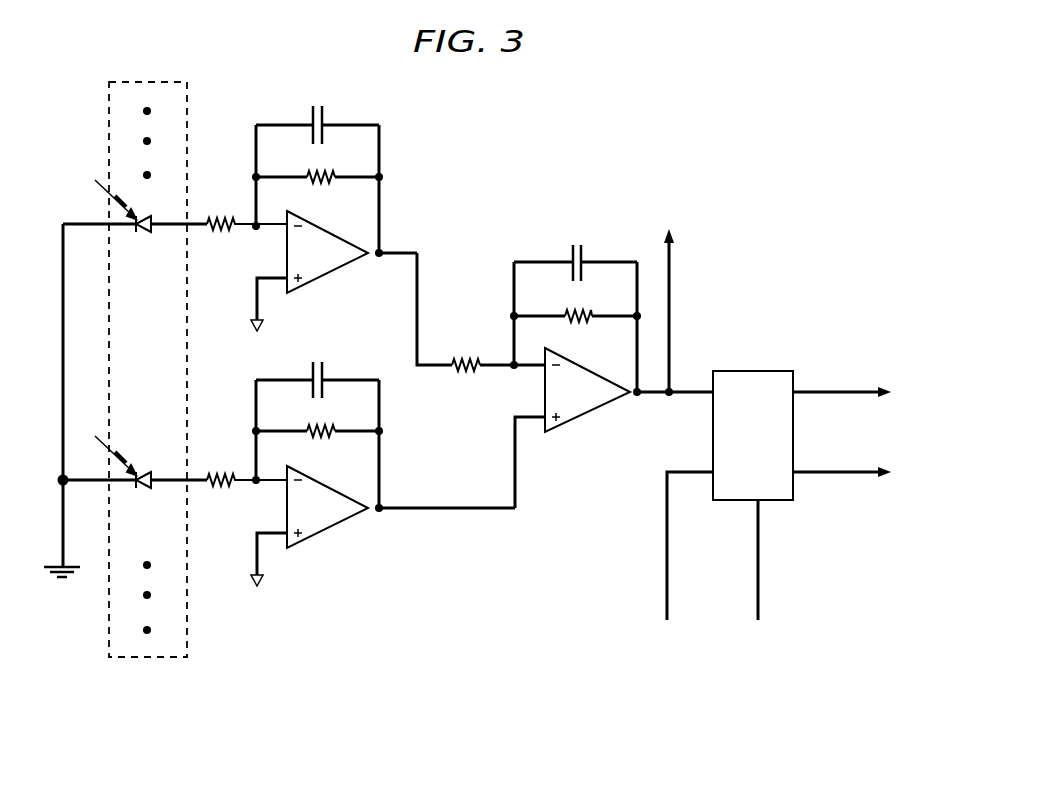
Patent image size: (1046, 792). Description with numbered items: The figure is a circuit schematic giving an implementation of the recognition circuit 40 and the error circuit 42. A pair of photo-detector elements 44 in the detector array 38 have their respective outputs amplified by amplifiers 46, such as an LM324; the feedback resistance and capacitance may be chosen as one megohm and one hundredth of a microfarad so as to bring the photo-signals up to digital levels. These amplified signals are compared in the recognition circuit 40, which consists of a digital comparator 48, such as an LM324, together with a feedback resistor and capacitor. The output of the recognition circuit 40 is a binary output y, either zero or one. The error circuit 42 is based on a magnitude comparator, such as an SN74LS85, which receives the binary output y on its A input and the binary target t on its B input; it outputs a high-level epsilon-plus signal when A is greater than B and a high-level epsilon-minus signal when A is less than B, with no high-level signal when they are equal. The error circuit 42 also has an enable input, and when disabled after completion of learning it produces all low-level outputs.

The detector array 38 is at (147, 657).
The recognition circuit 40 is at (580, 204).
The error circuit 42 is at (747, 371).
The photo-detector elements 44 is at (141, 231).
The amplifiers 46 is at (320, 281).
The digital comparator 48 is at (577, 418).